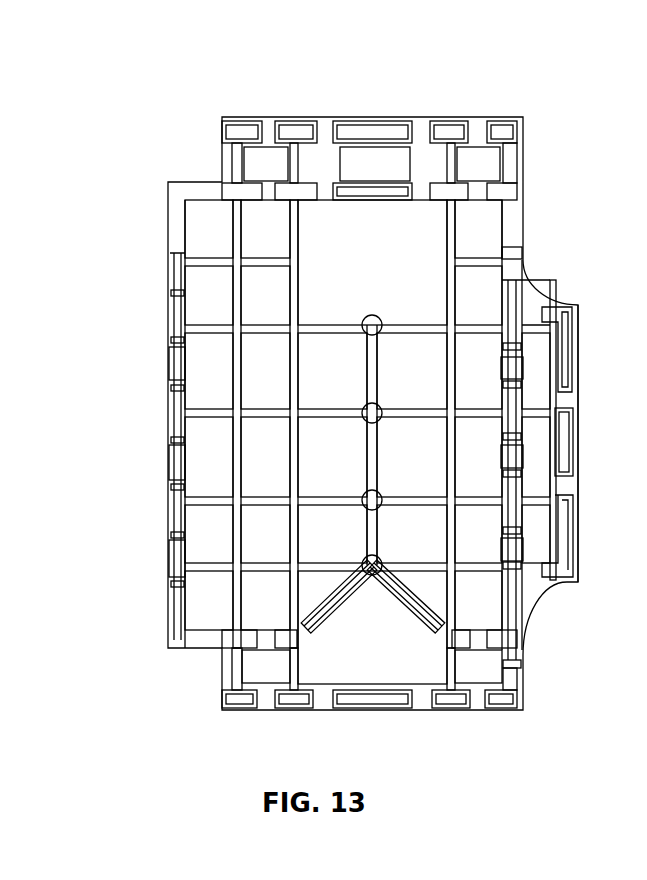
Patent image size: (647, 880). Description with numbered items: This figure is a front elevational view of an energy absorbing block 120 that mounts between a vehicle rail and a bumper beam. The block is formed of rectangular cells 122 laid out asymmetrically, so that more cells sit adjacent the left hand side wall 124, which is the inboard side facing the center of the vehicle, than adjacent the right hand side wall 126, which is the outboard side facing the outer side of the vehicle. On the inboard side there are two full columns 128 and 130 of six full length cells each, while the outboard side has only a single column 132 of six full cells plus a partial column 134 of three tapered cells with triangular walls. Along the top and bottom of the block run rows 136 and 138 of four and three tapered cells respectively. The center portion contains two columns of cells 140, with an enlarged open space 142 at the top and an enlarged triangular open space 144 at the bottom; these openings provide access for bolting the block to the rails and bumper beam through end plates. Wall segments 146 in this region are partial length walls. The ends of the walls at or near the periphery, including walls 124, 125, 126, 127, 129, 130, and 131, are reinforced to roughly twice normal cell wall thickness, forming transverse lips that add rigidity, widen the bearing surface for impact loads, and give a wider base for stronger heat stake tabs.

The energy absorbing block 120 is at (553, 158).
The rectangular cells 122 is at (204, 283).
The left hand side wall 124 is at (168, 402).
The wall 125 is at (520, 478).
The right hand side wall 126 is at (579, 361).
The wall 127 is at (327, 188).
The full column 128 is at (208, 228).
The wall 129 is at (388, 124).
The full column 130 is at (260, 228).
The wall 131 is at (478, 643).
The single column 132 is at (477, 218).
The partial column 134 is at (542, 355).
The top row 136 is at (238, 168).
The bottom row 138 is at (262, 663).
The center cells 140 is at (336, 350).
The enlarged open space 142 is at (378, 247).
The enlarged triangular open space 144 is at (378, 661).
The wall segments 146 is at (413, 413).